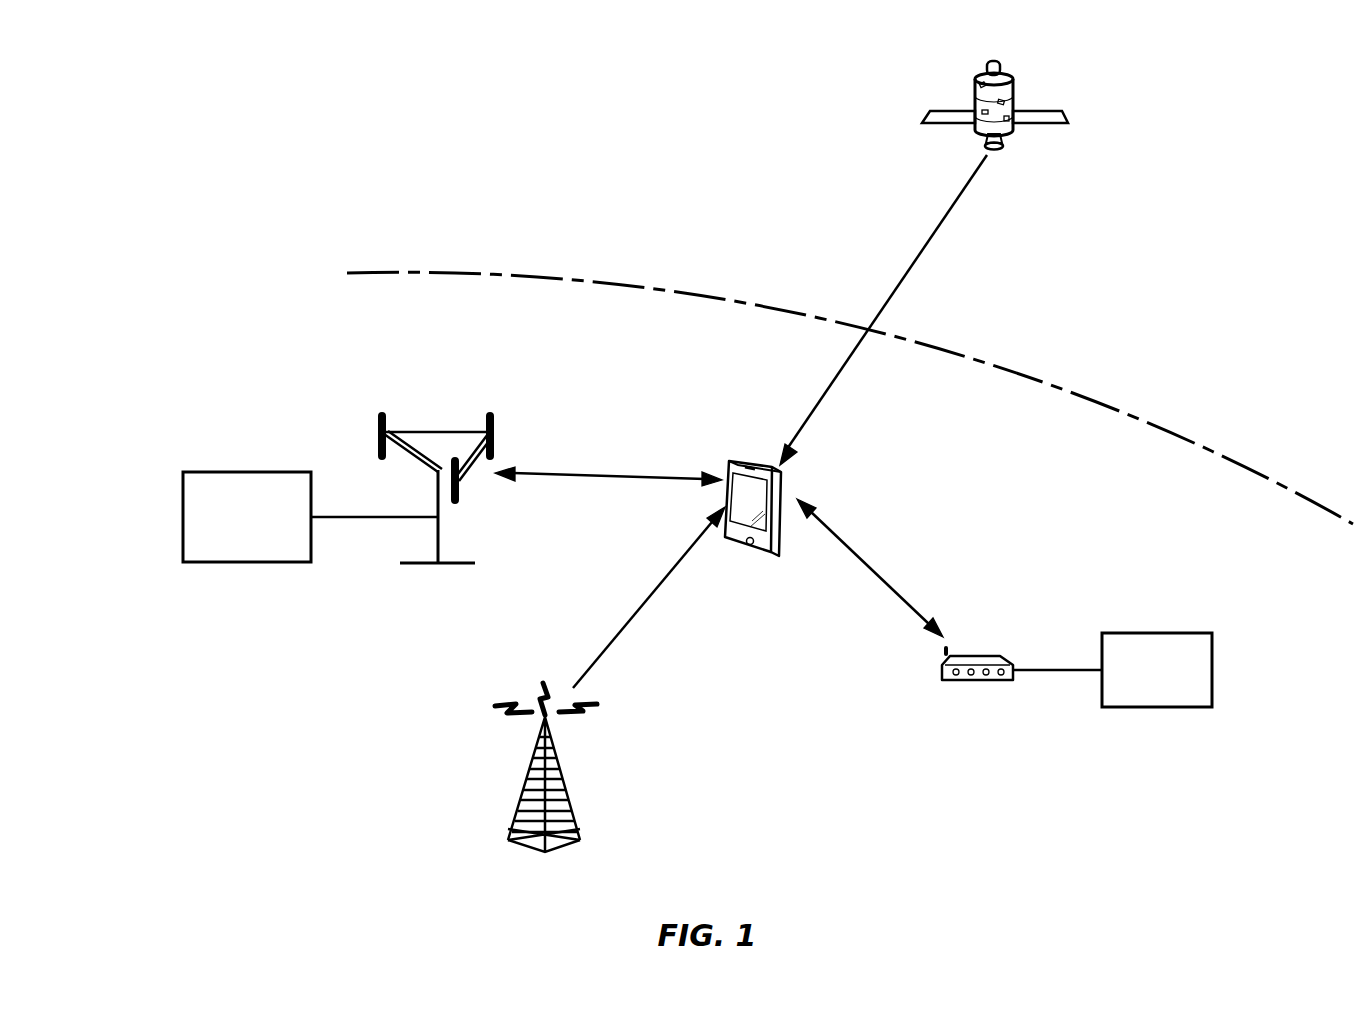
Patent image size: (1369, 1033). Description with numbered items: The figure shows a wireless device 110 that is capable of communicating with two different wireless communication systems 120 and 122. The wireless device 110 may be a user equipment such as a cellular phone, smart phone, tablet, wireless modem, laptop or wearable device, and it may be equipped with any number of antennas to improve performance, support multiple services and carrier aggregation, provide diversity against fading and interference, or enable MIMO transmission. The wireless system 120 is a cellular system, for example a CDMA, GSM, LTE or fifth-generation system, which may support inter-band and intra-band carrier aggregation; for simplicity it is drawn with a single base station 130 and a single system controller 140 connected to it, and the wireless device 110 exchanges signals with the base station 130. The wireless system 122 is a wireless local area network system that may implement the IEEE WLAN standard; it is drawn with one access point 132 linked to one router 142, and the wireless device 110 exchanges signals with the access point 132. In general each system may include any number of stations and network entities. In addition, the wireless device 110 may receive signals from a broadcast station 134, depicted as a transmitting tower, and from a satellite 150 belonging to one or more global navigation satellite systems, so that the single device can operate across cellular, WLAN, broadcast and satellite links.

The wireless device 110 is at (779, 554).
The wireless system 120 is at (187, 402).
The wireless system 122 is at (1213, 550).
The base station 130 is at (430, 431).
The access point 132 is at (970, 654).
The broadcast station 134 is at (576, 800).
The system controller 140 is at (243, 471).
The router 142 is at (1153, 632).
The satellite 150 is at (1043, 111).